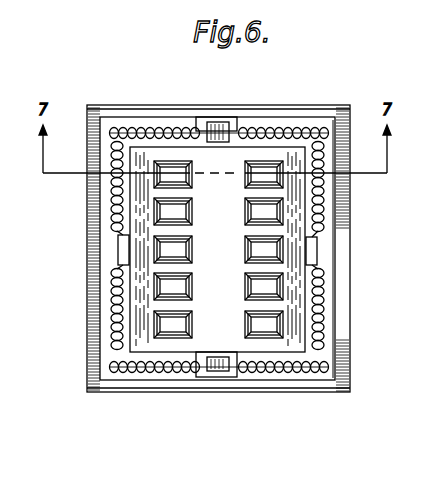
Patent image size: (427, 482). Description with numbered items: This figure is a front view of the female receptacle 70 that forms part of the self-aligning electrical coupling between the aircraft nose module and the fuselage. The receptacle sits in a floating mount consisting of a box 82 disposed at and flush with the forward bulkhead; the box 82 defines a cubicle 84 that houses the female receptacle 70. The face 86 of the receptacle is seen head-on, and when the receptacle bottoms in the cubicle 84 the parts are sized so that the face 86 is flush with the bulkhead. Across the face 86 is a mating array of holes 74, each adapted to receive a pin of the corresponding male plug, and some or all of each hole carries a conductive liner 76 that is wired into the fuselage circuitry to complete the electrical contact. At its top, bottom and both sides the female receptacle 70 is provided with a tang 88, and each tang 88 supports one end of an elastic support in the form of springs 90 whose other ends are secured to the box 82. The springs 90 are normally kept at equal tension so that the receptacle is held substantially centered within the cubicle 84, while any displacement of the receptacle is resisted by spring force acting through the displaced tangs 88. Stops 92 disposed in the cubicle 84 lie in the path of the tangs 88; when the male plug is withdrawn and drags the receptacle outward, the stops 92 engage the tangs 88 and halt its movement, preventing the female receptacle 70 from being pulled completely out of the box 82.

The female receptacle 70 is at (305, 262).
The holes 74 is at (168, 327).
The conductive liner 76 is at (192, 212).
The box 82 is at (335, 110).
The cubicle 84 is at (328, 302).
The face 86 is at (217, 249).
The tang 88 is at (223, 132).
The springs 90 is at (128, 133).
The stops 92 is at (195, 120).